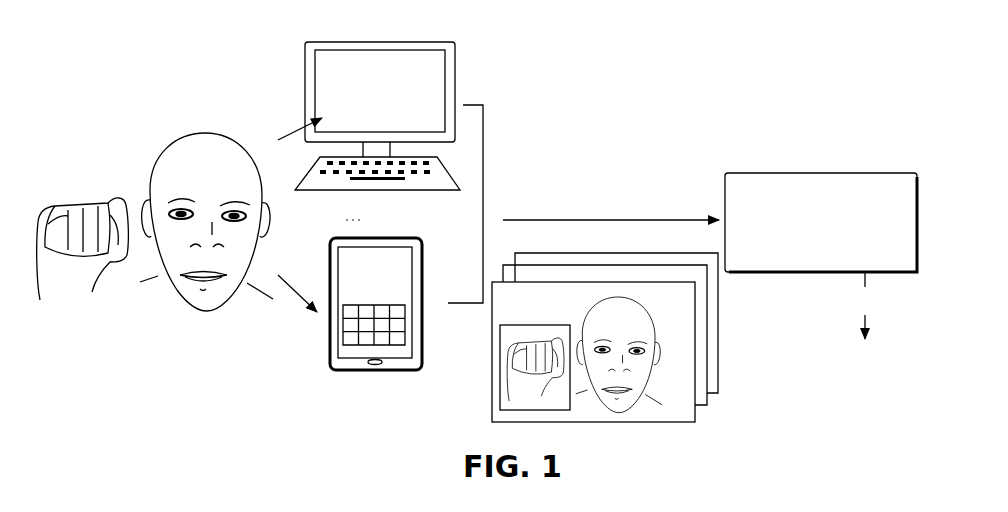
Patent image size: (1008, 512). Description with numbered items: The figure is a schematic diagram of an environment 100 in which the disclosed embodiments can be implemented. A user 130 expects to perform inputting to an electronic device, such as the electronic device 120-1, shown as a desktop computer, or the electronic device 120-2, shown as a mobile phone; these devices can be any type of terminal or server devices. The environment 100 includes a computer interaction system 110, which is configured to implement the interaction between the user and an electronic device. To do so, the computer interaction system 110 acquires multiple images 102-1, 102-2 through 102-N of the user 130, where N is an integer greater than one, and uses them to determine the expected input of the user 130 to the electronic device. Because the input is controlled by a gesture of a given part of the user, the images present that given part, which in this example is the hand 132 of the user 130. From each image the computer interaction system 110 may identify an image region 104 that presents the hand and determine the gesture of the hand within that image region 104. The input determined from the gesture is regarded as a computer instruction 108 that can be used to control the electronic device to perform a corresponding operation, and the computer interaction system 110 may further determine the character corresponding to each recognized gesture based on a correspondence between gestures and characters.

The environment 100 is at (604, 124).
The image 102-1 is at (625, 352).
The image 102-2 is at (705, 353).
The image 102-N is at (718, 325).
The image region 104 is at (519, 325).
The computer instruction 108 is at (859, 322).
The computer interaction system 110 is at (822, 173).
The electronic device 120-1 is at (405, 42).
The electronic device 120-2 is at (395, 238).
The user 130 is at (178, 138).
The hand 132 is at (110, 200).